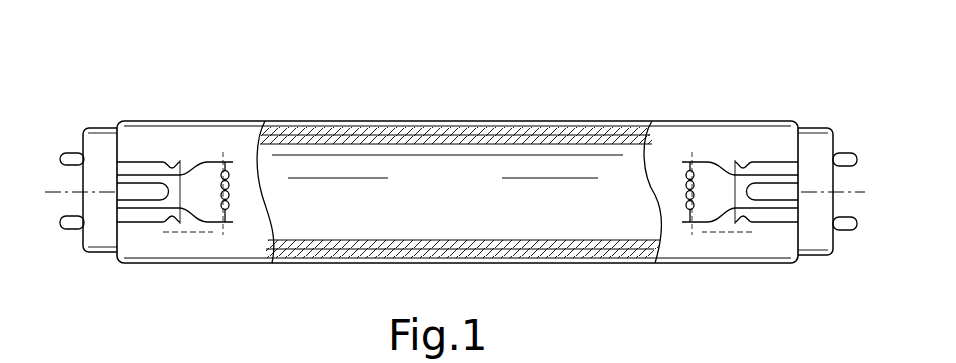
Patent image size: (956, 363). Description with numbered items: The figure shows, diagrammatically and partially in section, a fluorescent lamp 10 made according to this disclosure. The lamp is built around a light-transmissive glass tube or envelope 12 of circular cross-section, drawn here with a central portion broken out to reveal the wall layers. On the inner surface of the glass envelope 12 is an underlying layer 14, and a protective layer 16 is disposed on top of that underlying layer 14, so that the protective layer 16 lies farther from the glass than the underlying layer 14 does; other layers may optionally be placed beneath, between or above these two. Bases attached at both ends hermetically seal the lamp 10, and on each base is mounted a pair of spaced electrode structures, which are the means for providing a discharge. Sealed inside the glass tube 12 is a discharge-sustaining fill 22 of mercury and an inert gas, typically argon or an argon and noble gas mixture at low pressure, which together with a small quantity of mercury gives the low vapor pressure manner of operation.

The fluorescent lamp 10 is at (280, 82).
The glass tube or envelope 12 is at (453, 122).
The underlying layer 14 is at (508, 130).
The protective layer 16 is at (592, 138).
The discharge-sustaining fill 22 is at (385, 172).